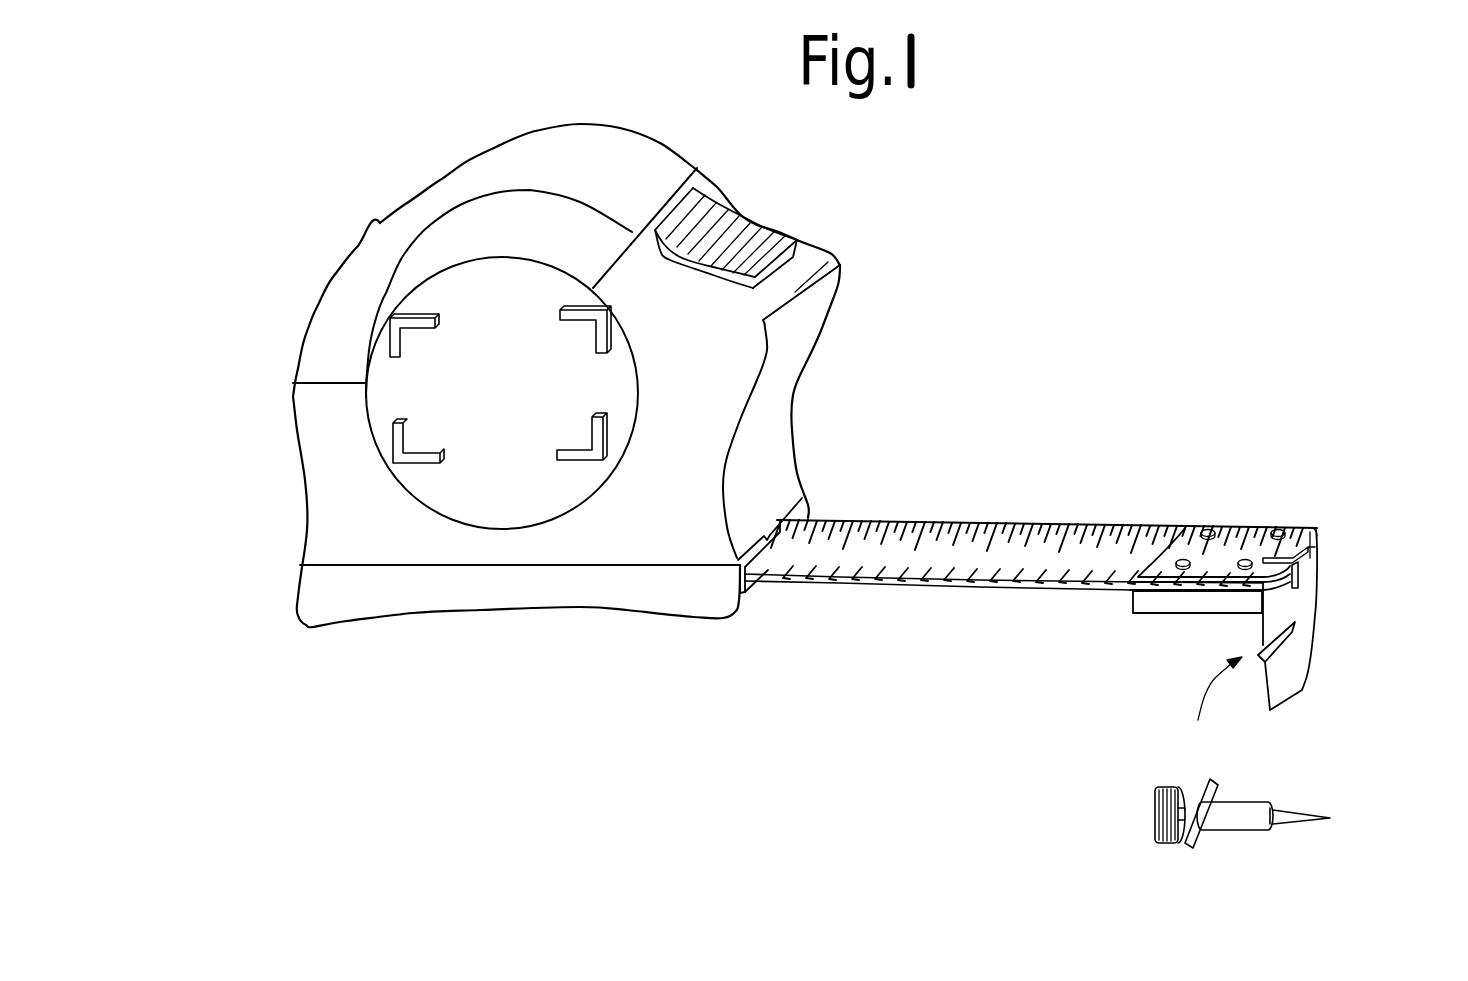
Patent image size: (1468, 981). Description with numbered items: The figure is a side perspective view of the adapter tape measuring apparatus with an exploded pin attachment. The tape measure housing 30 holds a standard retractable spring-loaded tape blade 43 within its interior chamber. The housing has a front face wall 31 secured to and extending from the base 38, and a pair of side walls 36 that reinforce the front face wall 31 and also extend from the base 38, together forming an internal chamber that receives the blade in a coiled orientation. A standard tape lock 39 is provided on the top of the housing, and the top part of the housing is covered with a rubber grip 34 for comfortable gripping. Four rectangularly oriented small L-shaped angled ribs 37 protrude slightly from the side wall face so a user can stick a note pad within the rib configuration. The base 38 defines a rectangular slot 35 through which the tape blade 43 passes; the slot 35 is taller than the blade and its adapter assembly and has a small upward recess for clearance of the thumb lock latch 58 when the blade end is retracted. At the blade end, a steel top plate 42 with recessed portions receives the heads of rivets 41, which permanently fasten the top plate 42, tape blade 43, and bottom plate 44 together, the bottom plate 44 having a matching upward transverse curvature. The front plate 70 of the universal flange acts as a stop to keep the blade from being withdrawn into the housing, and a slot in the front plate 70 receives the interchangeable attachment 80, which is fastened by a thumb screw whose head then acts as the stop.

The tape measure housing 30 is at (254, 408).
The front face wall 31 is at (790, 370).
The rubber grip 34 is at (447, 182).
The rectangular slot 35 is at (807, 511).
The side walls 36 is at (318, 530).
The L-shaped angled ribs 37 is at (413, 462).
The base 38 is at (660, 590).
The tape lock 39 is at (770, 233).
The rivets 41 is at (1208, 527).
The steel top plate 42 is at (1258, 530).
The tape blade 43 is at (1078, 523).
The bottom plate 44 is at (1145, 598).
The thumb lock latch 58 is at (1302, 530).
The front plate 70 is at (1307, 595).
The attachment 80 is at (1298, 778).